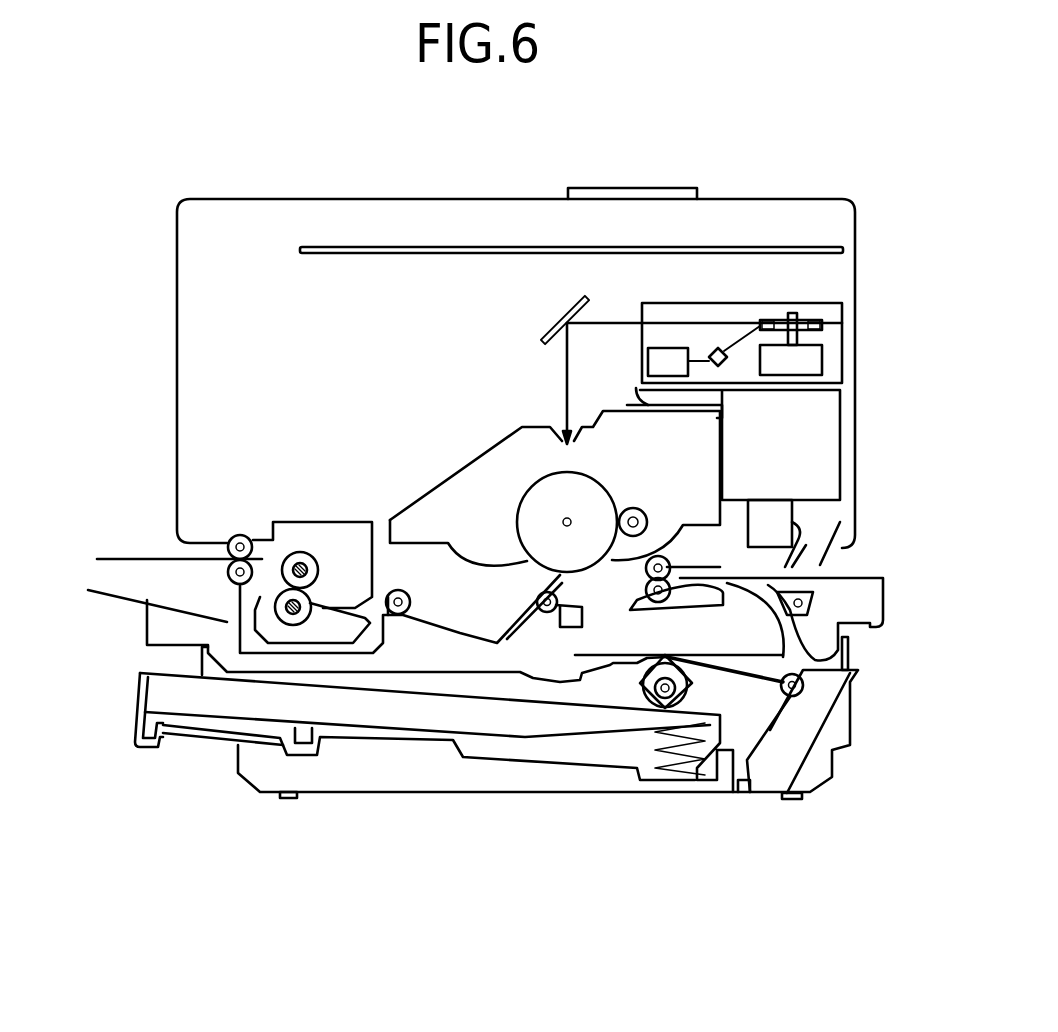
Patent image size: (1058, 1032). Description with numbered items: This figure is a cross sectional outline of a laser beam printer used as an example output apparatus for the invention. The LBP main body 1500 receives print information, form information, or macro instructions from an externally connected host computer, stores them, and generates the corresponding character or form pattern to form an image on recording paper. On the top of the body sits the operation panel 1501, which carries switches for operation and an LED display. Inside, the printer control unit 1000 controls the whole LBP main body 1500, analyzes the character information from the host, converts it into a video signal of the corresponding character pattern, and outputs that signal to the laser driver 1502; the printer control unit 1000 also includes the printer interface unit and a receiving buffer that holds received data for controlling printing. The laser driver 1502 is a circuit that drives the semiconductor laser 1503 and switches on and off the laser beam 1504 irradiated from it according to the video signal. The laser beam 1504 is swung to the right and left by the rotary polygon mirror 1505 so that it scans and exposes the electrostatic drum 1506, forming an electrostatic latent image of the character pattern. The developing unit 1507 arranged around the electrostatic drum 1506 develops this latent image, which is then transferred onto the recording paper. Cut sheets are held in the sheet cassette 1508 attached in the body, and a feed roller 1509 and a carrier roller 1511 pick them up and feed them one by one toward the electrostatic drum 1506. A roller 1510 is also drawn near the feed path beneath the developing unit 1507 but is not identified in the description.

The printer control unit 1000 is at (838, 250).
The LBP main body 1500 is at (778, 199).
The operation panel 1501 is at (633, 188).
The laser driver 1502 is at (647, 358).
The semiconductor laser 1503 is at (723, 366).
The laser beam 1504 is at (718, 323).
The rotary polygon mirror 1505 is at (842, 323).
The electrostatic drum 1506 is at (533, 487).
The developing unit 1507 is at (412, 513).
The sheet cassette 1508 is at (140, 716).
The feed roller 1509 is at (655, 698).
The feed roller 1510 is at (787, 700).
The carrier roller 1511 is at (650, 604).